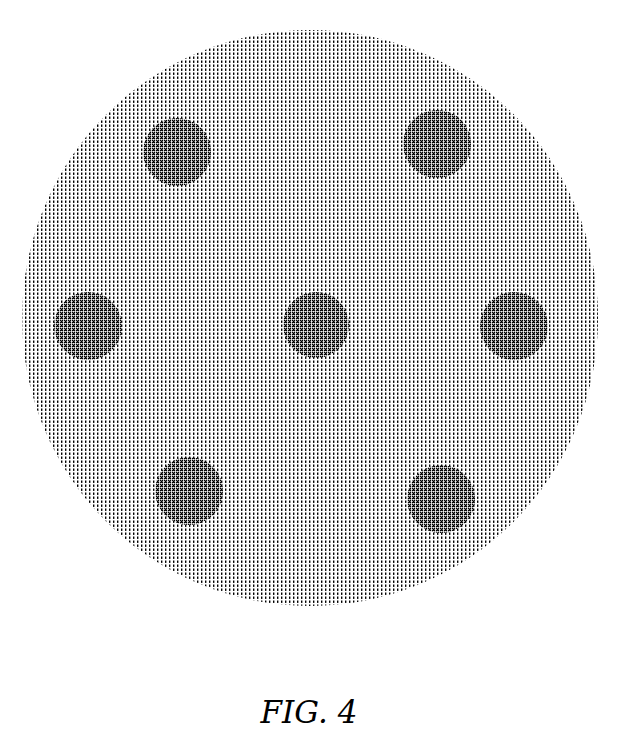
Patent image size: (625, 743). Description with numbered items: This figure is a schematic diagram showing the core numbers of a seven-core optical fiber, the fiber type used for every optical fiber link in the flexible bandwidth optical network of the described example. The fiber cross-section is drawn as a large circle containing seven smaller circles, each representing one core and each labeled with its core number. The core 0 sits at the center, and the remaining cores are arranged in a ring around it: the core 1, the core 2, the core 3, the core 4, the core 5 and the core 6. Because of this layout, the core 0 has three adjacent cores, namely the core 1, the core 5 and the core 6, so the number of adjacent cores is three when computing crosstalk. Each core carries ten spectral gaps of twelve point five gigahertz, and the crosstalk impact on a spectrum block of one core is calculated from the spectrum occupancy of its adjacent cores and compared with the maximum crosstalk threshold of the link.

The core 0 is at (437, 144).
The core 1 is at (514, 326).
The core 2 is at (441, 499).
The core 3 is at (189, 491).
The core 4 is at (88, 326).
The core 5 is at (177, 152).
The core 6 is at (316, 325).